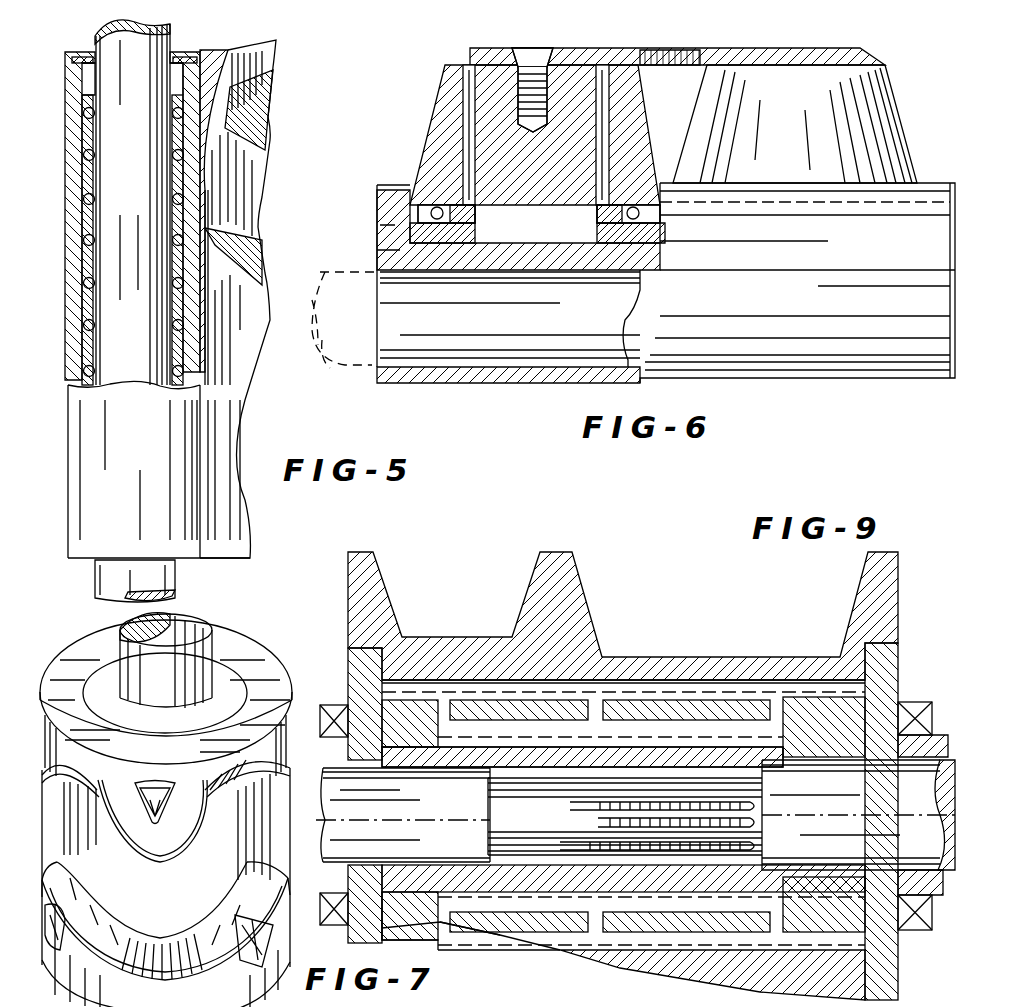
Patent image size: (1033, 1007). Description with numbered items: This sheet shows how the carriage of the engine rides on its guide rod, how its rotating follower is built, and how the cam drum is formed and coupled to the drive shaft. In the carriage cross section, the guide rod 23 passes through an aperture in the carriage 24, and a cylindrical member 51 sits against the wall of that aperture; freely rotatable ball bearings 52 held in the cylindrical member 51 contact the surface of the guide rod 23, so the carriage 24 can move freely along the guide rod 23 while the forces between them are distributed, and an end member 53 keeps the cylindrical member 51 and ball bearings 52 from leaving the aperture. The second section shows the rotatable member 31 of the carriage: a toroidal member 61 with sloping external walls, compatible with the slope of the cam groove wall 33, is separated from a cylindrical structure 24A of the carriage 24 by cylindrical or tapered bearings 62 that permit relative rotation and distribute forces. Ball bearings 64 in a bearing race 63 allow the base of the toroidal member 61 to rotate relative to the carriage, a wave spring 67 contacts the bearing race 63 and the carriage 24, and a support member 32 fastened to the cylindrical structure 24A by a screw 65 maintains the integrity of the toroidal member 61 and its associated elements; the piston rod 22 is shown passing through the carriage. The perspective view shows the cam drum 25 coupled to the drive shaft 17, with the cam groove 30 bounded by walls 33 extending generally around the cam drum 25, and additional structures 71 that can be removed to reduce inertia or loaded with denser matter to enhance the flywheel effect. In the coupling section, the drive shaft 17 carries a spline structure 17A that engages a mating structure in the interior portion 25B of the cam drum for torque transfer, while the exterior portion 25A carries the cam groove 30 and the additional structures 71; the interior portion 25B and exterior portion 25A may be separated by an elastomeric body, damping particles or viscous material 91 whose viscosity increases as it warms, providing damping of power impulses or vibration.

In FIG. 7, the drive shaft 17 is at (212, 632).
In FIG. 9, the drive shaft 17 is at (858, 815).
In FIG. 9, the spline structure 17A is at (640, 848).
In FIG. 6, the piston rod 22 is at (343, 340).
In FIG. 5, the guide rod 23 is at (95, 34).
In FIG. 5, the carriage 24 is at (215, 58).
In FIG. 6, the carriage 24 is at (840, 385).
In FIG. 6, the cylindrical structure 24A is at (642, 50).
In FIG. 7, the cam drum 25 is at (58, 672).
In FIG. 9, the cam drum 25 is at (500, 964).
In FIG. 9, the exterior portion of the cam drum 25A is at (898, 590).
In FIG. 9, the interior portion of the cam drum 25B is at (403, 815).
In FIG. 7, the cam groove 30 is at (62, 835).
In FIG. 9, the cam groove 30 is at (712, 600).
In FIG. 6, the rotatable member 31 is at (415, 190).
In FIG. 6, the support member 32 is at (590, 48).
In FIG. 7, the cam groove wall 33 is at (246, 774).
In FIG. 5, the cylindrical member 51 is at (85, 135).
In FIG. 5, the ball bearings 52 is at (84, 283).
In FIG. 5, the end member 53 is at (180, 60).
In FIG. 6, the toroidal member 61 is at (445, 105).
In FIG. 6, the cylindrical bearings 62 is at (476, 118).
In FIG. 6, the bearing race 63 is at (510, 290).
In FIG. 6, the ball bearings 64 is at (437, 207).
In FIG. 6, the screw 65 is at (532, 48).
In FIG. 6, the wave spring 67 is at (630, 243).
In FIG. 7, the additional structures 71 is at (50, 950).
In FIG. 9, the additional structures 71 is at (457, 595).
In FIG. 9, the viscous material 91 is at (658, 730).